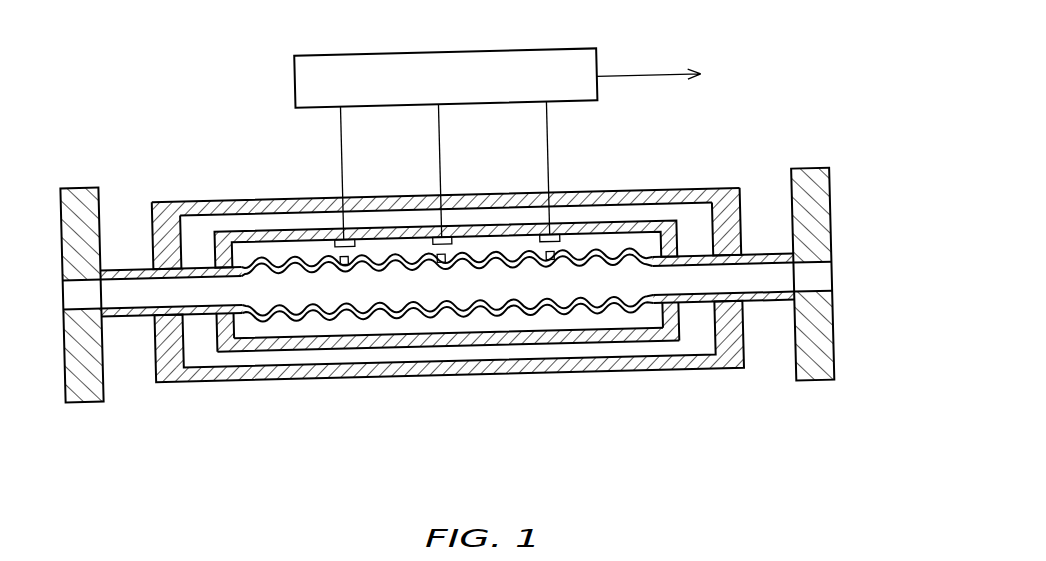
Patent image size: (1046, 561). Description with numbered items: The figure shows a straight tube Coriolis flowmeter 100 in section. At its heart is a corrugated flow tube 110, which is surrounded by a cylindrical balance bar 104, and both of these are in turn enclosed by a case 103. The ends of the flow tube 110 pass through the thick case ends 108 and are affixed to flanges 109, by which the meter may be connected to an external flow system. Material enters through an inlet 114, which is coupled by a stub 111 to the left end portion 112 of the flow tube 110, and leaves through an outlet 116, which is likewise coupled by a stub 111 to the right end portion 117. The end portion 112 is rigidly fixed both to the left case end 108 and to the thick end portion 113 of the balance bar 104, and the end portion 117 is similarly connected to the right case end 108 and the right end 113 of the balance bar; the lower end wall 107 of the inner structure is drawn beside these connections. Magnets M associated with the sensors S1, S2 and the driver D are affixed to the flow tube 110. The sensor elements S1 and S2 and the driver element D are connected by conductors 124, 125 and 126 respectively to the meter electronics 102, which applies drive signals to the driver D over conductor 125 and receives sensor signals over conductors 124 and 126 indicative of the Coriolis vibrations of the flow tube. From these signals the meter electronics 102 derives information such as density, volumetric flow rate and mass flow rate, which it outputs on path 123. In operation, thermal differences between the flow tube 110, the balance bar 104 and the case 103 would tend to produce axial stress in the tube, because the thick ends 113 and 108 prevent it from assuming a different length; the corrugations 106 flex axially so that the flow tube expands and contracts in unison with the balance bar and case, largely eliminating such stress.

The Coriolis flowmeter 100 is at (142, 53).
The meter electronics 102 is at (480, 50).
The case 103 is at (590, 188).
The balance bar 104 is at (418, 348).
The corrugations 106 is at (283, 307).
The inner case end wall 107 is at (205, 337).
The case end 108 is at (152, 240).
The flange 109 is at (80, 192).
The flow tube 110 is at (567, 283).
The stub 111 is at (120, 305).
The end portion 112 is at (118, 302).
The end portion of balance bar 113 is at (217, 243).
The inlet 114 is at (68, 293).
The outlet 116 is at (815, 275).
The end portion 117 is at (720, 283).
The path 123 is at (643, 78).
The conductor 124 is at (342, 148).
The conductor 125 is at (439, 150).
The conductor 126 is at (548, 158).
The sensor S1 is at (335, 245).
The sensor S2 is at (560, 243).
The driver D is at (436, 250).
The magnet M is at (345, 265).